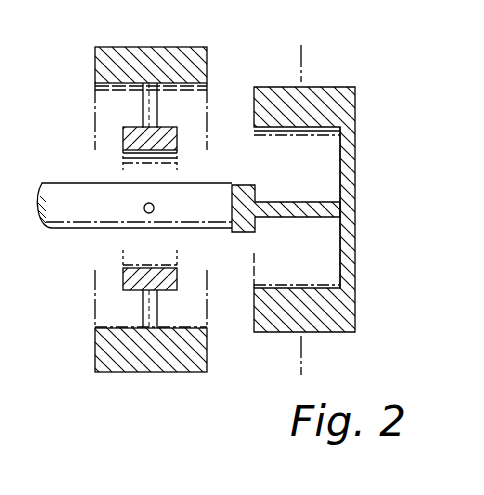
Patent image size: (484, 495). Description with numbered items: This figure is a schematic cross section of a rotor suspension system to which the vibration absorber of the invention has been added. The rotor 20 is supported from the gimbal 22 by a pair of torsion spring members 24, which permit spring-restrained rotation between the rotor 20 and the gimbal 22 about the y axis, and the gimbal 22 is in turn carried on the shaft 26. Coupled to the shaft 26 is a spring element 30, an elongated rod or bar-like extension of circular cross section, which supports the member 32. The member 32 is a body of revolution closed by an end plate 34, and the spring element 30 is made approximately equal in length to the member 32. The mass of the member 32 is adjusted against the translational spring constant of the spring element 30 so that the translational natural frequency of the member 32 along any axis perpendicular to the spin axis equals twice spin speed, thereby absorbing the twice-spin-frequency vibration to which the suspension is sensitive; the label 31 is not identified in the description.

The rotor 20 is at (122, 47).
The gimbal 22 is at (126, 136).
The torsion spring members 24 is at (146, 95).
The shaft 26 is at (66, 228).
The spring element 30 is at (264, 200).
The label 31 is at (409, 217).
The member 32 is at (326, 88).
The end plate 34 is at (348, 152).